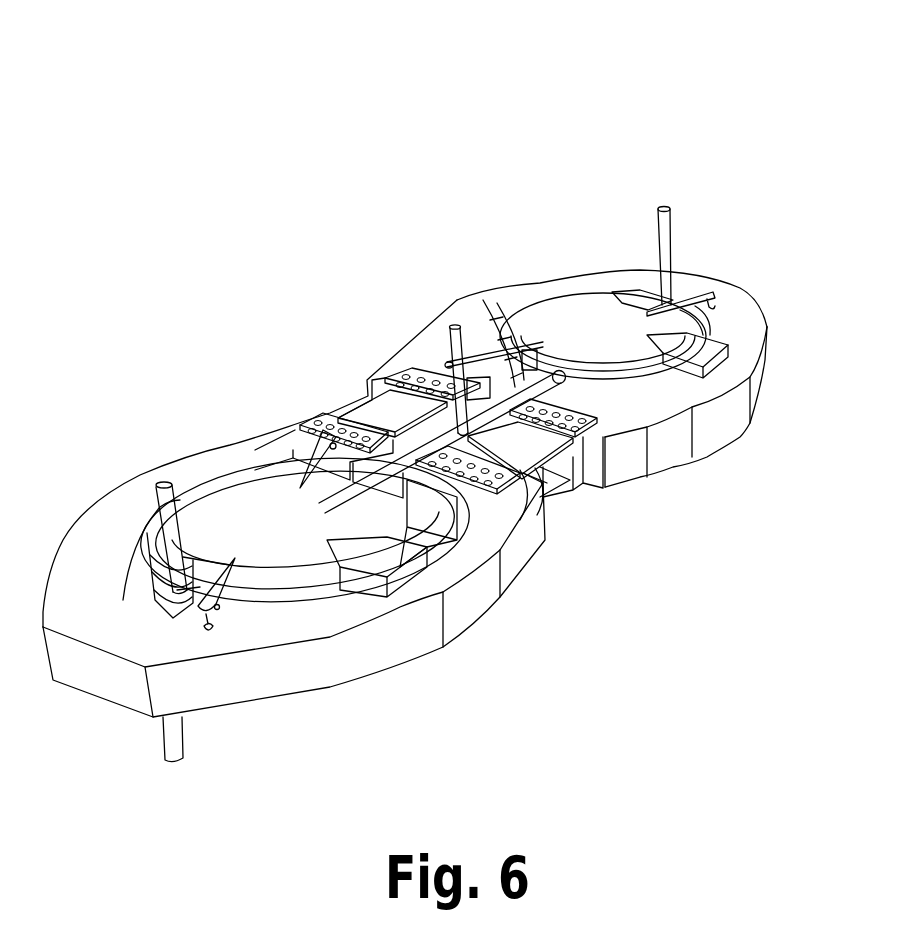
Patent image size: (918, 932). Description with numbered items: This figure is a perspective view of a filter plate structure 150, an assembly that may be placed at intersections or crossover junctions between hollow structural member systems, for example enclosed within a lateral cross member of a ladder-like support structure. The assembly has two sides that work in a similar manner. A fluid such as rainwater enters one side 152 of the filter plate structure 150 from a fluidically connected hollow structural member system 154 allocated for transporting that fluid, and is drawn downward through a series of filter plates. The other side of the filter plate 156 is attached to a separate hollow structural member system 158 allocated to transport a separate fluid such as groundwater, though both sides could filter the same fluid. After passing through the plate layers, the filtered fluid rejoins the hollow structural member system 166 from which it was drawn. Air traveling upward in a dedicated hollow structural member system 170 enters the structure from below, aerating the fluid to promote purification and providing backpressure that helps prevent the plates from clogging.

The filter plate structure 150 is at (468, 73).
The one side of the filter plate structure 152 is at (250, 485).
The hollow structural member system 154 is at (150, 493).
The other side of the filter plate 156 is at (618, 358).
The separate hollow structural member system 158 is at (672, 230).
The hollow structural member system 166 is at (186, 743).
The dedicated hollow structural member system 170 is at (488, 330).